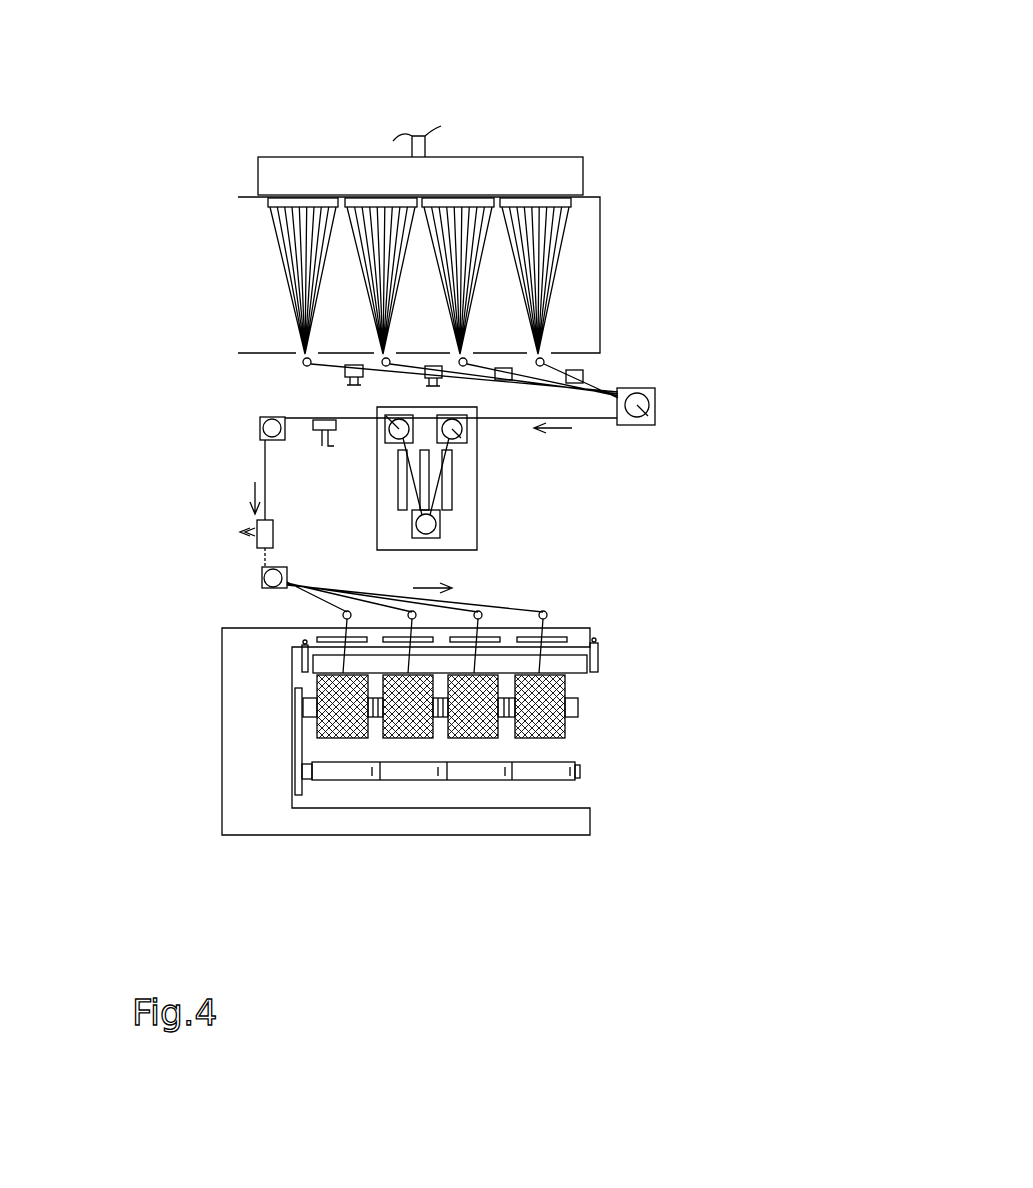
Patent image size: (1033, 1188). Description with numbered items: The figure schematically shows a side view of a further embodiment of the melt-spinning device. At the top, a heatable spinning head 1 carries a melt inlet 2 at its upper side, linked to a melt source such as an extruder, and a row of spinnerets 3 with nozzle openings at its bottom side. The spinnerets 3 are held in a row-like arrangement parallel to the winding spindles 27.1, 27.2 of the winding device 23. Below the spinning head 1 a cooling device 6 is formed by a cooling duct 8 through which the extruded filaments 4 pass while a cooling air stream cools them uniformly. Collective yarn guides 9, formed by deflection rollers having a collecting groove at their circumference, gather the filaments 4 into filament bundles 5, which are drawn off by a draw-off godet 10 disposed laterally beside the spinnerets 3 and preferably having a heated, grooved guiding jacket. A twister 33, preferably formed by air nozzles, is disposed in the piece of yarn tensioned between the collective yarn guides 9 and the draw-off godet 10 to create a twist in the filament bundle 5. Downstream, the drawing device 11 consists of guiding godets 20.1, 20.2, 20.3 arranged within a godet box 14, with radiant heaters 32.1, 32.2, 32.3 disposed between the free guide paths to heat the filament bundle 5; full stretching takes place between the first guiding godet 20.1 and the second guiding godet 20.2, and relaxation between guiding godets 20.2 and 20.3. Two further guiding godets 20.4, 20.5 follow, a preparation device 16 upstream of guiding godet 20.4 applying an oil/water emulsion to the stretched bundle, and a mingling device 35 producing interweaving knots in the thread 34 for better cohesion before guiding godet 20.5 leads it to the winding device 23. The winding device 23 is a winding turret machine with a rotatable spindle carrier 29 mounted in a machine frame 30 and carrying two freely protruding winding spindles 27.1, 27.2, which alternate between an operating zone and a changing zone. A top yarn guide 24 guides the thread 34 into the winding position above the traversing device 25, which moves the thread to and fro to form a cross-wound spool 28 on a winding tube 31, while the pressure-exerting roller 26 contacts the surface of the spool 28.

The spinning head 1 is at (555, 177).
The melt inlet 2 is at (425, 146).
The spinneret 3 is at (575, 204).
The filaments 4 is at (552, 268).
The filament bundle 5 is at (597, 350).
The cooling device 6 is at (182, 260).
The cooling duct 8 is at (590, 243).
The collective yarn guide 9 is at (545, 358).
The draw-off godet 10 is at (645, 412).
The drawing device 11 is at (753, 465).
The godet box 14 is at (373, 512).
The preparation device 16 is at (322, 430).
The guiding godet 20.1 is at (468, 437).
The guiding godet 20.2 is at (430, 533).
The guiding godet 20.3 is at (390, 422).
The guiding godet 20.4 is at (262, 428).
The guiding godet 20.5 is at (260, 582).
The winding device 23 is at (170, 727).
The top yarn guide 24 is at (553, 615).
The traversing device 25 is at (553, 653).
The pressure-exerting roller 26 is at (553, 668).
The winding spindle 27.1 is at (578, 713).
The winding spindle 27.2 is at (580, 772).
The spool 28 is at (545, 740).
The spindle carrier 29 is at (303, 777).
The machine frame 30 is at (250, 768).
The winding tube 31 is at (522, 775).
The radiant heater 32.1 is at (447, 467).
The radiant heater 32.2 is at (440, 513).
The radiant heater 32.3 is at (403, 475).
The twister 33 is at (583, 375).
The thread 34 is at (257, 555).
The mingling device 35 is at (257, 542).